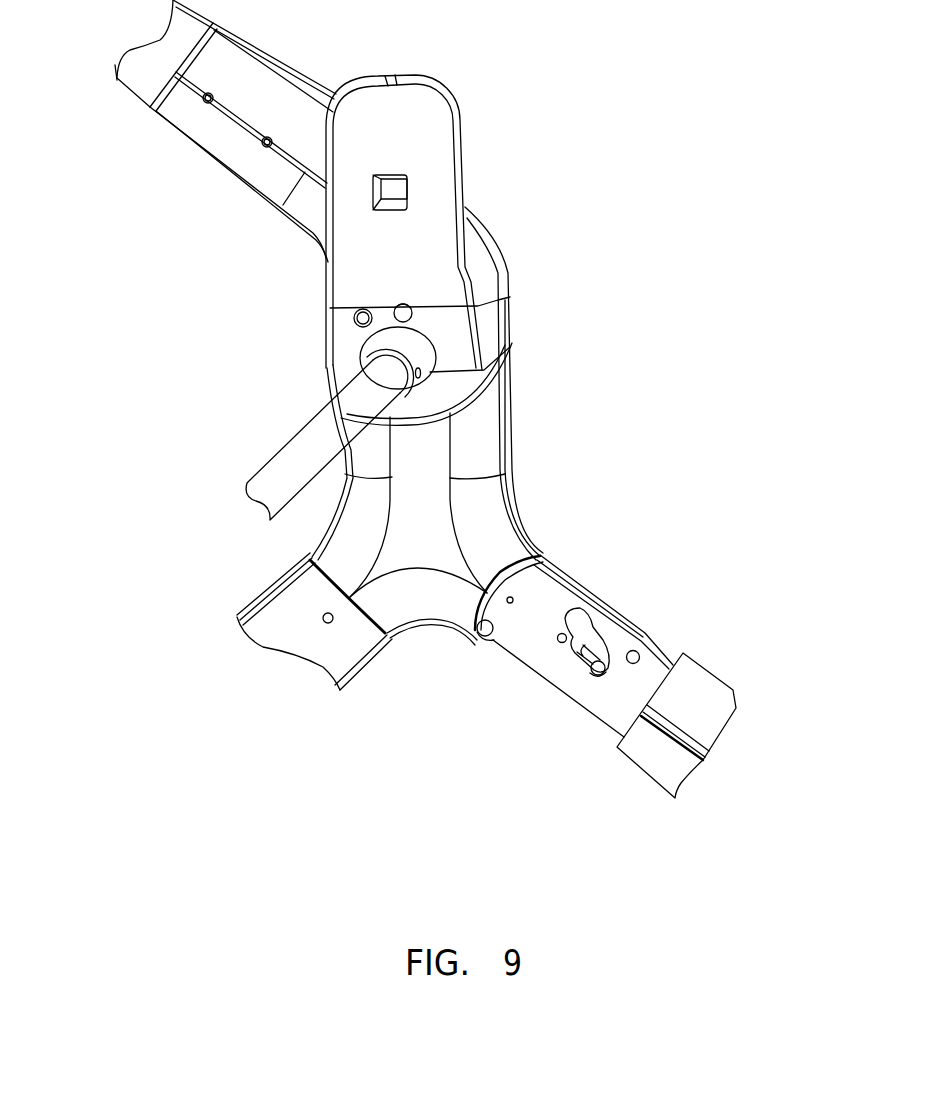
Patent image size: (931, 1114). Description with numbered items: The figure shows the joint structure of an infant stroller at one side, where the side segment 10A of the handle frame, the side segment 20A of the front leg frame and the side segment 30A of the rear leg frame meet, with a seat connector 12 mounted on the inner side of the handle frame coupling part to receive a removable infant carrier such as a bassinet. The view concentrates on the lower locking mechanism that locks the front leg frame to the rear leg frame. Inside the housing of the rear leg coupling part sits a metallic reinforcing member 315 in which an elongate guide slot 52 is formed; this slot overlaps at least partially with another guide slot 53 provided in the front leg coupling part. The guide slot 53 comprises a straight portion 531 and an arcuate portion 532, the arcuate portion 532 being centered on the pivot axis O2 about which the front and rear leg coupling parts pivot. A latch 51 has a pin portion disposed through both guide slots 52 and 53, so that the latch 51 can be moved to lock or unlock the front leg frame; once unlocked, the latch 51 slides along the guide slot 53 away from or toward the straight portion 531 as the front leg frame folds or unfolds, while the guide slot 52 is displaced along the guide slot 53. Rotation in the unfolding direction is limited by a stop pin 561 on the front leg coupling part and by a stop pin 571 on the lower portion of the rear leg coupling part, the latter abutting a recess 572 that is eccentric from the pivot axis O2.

The side segment of the handle frame 10A is at (153, 70).
The seat connector 12 is at (407, 148).
The reinforcing member 315 is at (543, 602).
The arcuate portion 532 is at (578, 614).
The guide slot 53 is at (649, 594).
The straight portion 531 is at (606, 652).
The stop pin 561 is at (641, 654).
The stop pin 571 is at (483, 633).
The recess 572 is at (497, 643).
The pivot axis O2 is at (559, 643).
The guide slot 52 is at (582, 648).
The latch 51 is at (593, 667).
The side segment of the rear leg frame 30A is at (293, 640).
The side segment of the front leg frame 20A is at (717, 727).